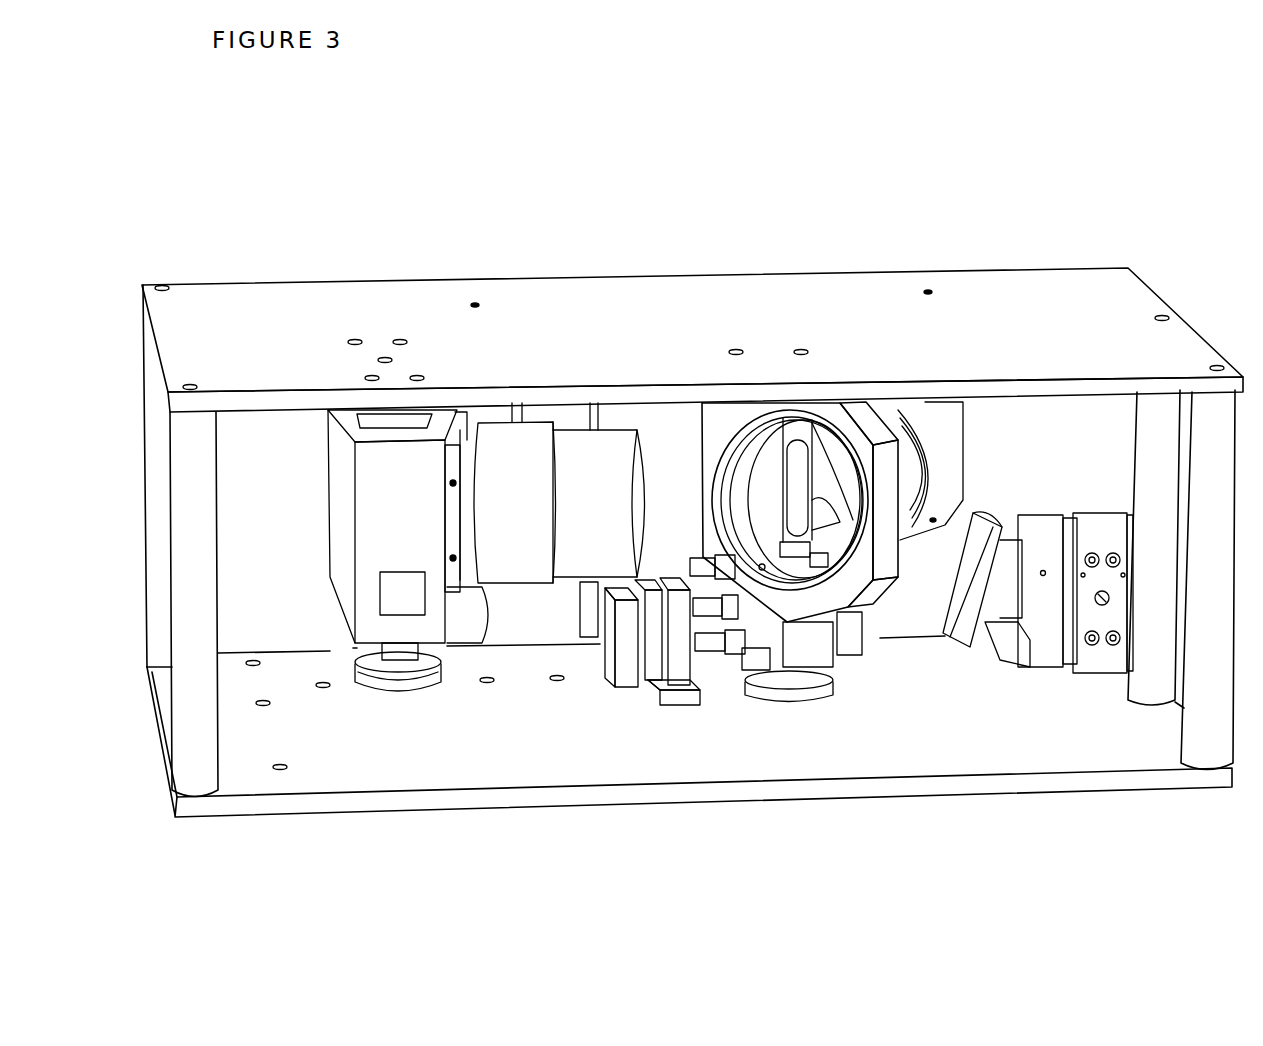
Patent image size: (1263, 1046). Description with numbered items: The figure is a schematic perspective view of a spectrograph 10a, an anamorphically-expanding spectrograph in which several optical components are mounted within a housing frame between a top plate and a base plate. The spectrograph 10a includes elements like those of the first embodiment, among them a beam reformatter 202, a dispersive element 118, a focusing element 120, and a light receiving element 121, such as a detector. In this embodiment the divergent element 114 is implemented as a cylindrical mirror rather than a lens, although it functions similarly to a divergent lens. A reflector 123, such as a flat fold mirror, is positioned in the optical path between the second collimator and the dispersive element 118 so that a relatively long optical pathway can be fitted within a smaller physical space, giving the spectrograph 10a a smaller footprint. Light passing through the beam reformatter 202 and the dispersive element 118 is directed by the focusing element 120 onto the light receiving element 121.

The spectrograph 10a is at (335, 254).
The divergent element 114 is at (962, 593).
The dispersive element 118 is at (800, 603).
The focusing element 120 is at (598, 548).
The light receiving element 121 is at (425, 537).
The reflector 123 is at (913, 447).
The beam reformatter 202 is at (872, 710).